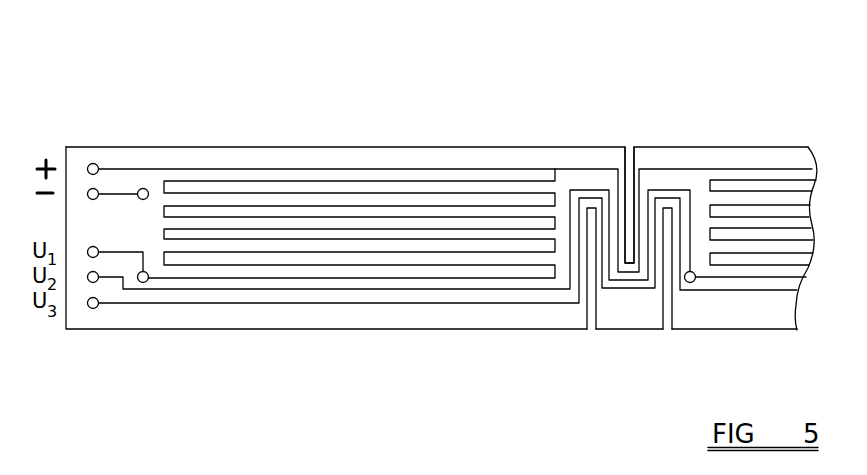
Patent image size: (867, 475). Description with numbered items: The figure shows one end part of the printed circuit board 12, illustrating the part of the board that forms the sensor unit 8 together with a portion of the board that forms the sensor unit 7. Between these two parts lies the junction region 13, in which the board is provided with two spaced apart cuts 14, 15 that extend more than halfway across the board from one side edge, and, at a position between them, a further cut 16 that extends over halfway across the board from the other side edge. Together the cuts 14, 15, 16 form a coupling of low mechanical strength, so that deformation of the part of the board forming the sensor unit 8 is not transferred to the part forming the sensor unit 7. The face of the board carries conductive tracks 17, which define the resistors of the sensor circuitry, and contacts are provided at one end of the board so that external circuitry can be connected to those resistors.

The sensor unit 7 is at (755, 139).
The sensor unit 8 is at (335, 145).
The printed circuit board 12 is at (697, 147).
The junction region 13 is at (629, 120).
The cut 14 is at (592, 332).
The cut 15 is at (667, 332).
The further cut 16 is at (633, 143).
The conductive tracks 17 is at (245, 181).